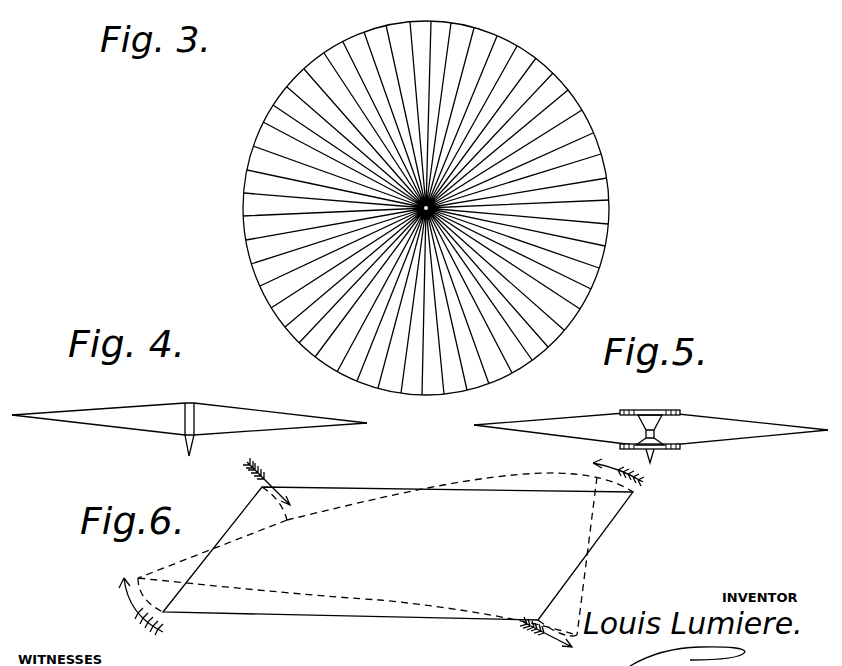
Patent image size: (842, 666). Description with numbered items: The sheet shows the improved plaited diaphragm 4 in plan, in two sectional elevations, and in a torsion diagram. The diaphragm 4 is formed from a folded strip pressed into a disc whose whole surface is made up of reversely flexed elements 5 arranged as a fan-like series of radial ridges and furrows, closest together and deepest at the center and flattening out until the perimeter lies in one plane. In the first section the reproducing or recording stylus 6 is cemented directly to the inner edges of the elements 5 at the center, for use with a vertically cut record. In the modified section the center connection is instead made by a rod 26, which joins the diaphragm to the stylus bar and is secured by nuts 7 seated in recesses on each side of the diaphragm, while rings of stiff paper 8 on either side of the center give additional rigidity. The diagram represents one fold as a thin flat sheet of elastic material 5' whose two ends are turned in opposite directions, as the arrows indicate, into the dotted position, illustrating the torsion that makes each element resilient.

In FIG. 3, the diaphragm 4 is at (605, 140).
In FIG. 4, the diaphragm 4 is at (160, 408).
In FIG. 5, the diaphragm 4 is at (722, 427).
In FIG. 3, the elements 5 is at (444, 208).
In FIG. 4, the elements 5 is at (189, 440).
In FIG. 5, the elements 5 is at (651, 442).
In FIG. 6, the thin flat sheet of elastic material 5' is at (381, 550).
In FIG. 4, the stylus 6 is at (183, 448).
In FIG. 5, the nuts 7 is at (655, 413).
In FIG. 5, the rings of stiff paper 8 is at (630, 411).
In FIG. 5, the rod 26 is at (652, 459).